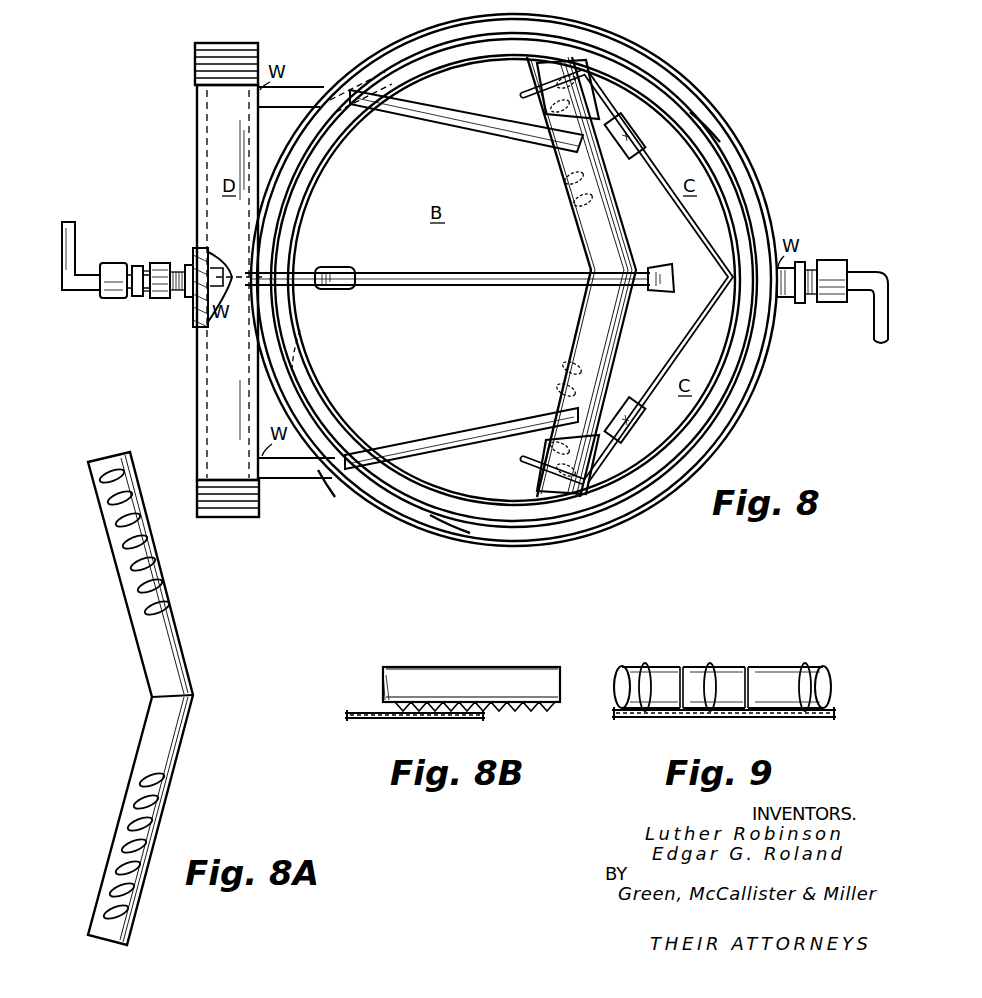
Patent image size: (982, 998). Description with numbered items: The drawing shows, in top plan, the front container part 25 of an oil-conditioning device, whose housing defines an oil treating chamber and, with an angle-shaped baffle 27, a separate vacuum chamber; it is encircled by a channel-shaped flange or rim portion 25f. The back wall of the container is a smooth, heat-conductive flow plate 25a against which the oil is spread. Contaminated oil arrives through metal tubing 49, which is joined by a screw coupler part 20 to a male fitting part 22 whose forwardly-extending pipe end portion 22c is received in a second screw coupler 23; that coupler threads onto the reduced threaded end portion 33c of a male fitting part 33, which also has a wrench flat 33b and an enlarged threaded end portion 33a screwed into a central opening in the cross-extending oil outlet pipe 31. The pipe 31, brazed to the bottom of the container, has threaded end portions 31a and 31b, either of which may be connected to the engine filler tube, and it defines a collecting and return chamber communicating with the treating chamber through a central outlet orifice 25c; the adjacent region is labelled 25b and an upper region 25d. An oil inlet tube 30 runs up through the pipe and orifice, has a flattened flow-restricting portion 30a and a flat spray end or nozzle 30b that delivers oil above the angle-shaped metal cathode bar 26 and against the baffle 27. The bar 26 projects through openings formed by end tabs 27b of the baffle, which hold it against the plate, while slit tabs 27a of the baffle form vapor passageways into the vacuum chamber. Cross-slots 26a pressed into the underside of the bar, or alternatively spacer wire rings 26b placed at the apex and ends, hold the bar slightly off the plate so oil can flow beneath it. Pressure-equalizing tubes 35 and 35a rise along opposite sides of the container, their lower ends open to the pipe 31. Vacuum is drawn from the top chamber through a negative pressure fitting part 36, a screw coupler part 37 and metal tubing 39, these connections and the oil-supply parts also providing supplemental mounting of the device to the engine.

In FIG. 8, the screw coupler part 20 is at (120, 262).
In FIG. 8, the male fitting part 22 is at (136, 265).
In FIG. 8, the pipe end portion 22c is at (146, 294).
In FIG. 8, the second screw coupler 23 is at (162, 262).
In FIG. 8, the container part 25 is at (800, 168).
In FIG. 8, the flow plate or back oil-heating wall 25a is at (432, 518).
In FIG. 8B, the flow plate or back oil-heating wall 25a is at (360, 710).
In FIG. 9, the flow plate or back oil-heating wall 25a is at (680, 718).
In FIG. 8, the rim lower portion 25b is at (328, 487).
In FIG. 8, the central outlet orifice 25c is at (310, 330).
In FIG. 8, the rim upper portion 25d is at (366, 80).
In FIG. 8, the channel or U-shaped flange or rim portion 25f is at (700, 135).
In FIG. 8, the metal cathode bar 26 is at (583, 247).
In FIG. 8A, the metal cathode bar 26 is at (192, 668).
In FIG. 8B, the metal cathode bar 26 is at (500, 666).
In FIG. 9, the metal cathode bar 26 is at (620, 668).
In FIG. 8, the cross-slots 26a is at (566, 192).
In FIG. 8A, the cross-slots 26a is at (155, 588).
In FIG. 8B, the cross-slots 26a is at (535, 713).
In FIG. 9, the spacer wire rings 26b is at (666, 657).
In FIG. 8, the baffle or partition member 27 is at (690, 222).
In FIG. 8, the slit tabs 27a is at (632, 160).
In FIG. 8, the end tabs 27b is at (524, 96).
In FIG. 8, the oil inlet tube 30 is at (522, 288).
In FIG. 8, the flattened portion 30a is at (336, 291).
In FIG. 8, the flat spray end or nozzle 30b is at (674, 292).
In FIG. 8, the oil outlet pipe 31 is at (197, 130).
In FIG. 8, the threaded end portion 31a is at (195, 65).
In FIG. 8, the opposite threaded end 31b is at (262, 520).
In FIG. 8, the male fitting part 33 is at (189, 264).
In FIG. 8, the enlarged male forward threaded end portion 33a is at (216, 256).
In FIG. 8, the wrench flat 33b is at (194, 330).
In FIG. 8, the reduced male threaded end portion 33c is at (178, 292).
In FIG. 8, the pressure-equalizing tube 35 is at (428, 127).
In FIG. 8, the pressure-equalizing tube 35a is at (494, 428).
In FIG. 8, the negative pressure fitting part 36 is at (790, 300).
In FIG. 8, the screw coupler part 37 is at (846, 250).
In FIG. 8, the metal tubing 39 is at (870, 272).
In FIG. 8, the metal tubing 49 is at (70, 222).